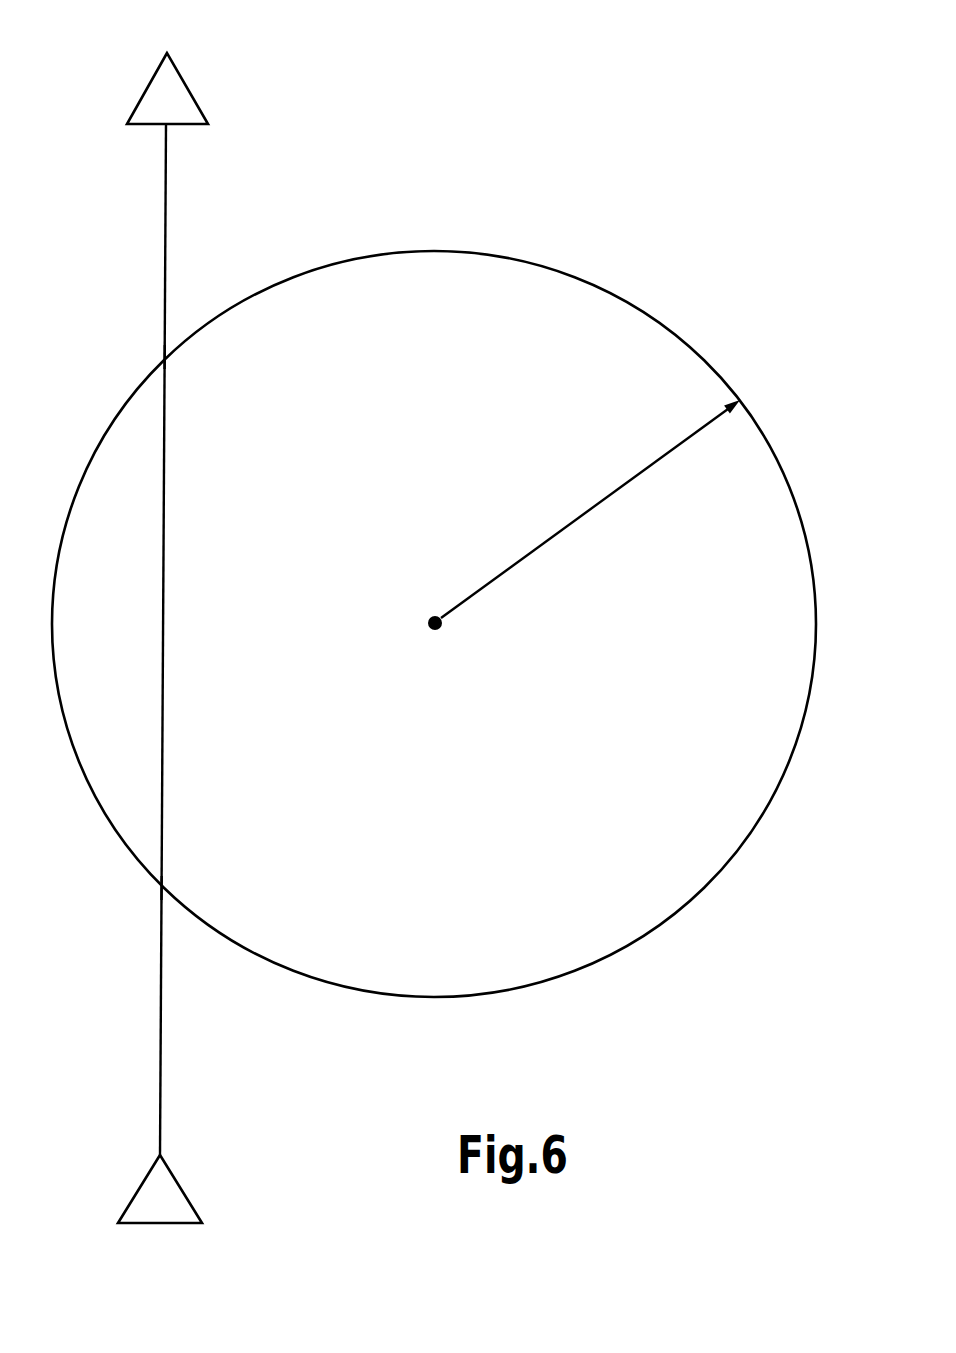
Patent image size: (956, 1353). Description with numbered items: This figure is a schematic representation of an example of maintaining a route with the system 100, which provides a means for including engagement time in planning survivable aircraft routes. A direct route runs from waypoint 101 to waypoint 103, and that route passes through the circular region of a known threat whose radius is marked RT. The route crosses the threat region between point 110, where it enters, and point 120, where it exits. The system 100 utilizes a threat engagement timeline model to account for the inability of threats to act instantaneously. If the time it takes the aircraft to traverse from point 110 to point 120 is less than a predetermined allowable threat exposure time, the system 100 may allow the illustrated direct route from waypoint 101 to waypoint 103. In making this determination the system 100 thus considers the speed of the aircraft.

The system 100 is at (682, 220).
The waypoint 101 is at (180, 1180).
The waypoint 103 is at (192, 92).
The point 110 is at (160, 890).
The point 120 is at (163, 355).